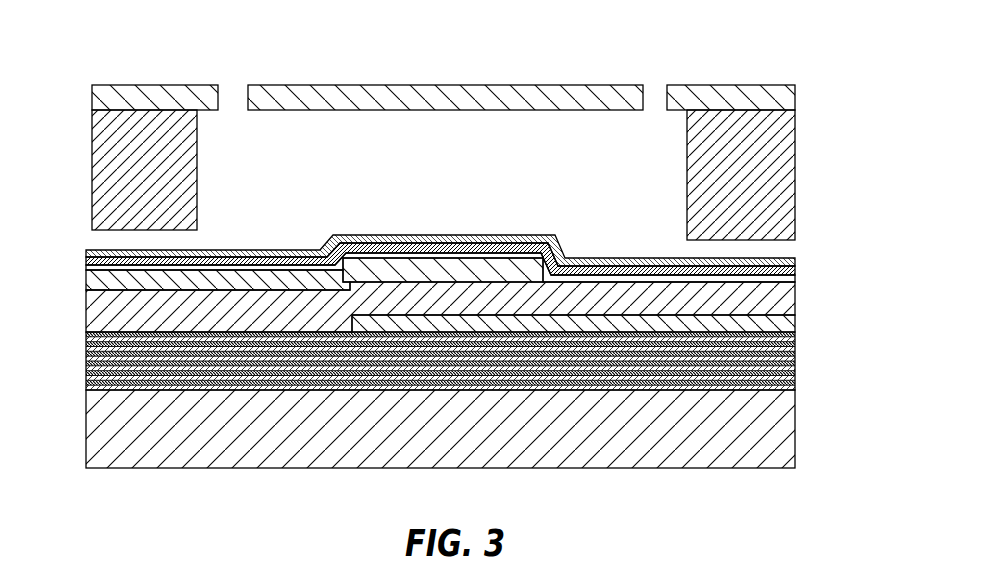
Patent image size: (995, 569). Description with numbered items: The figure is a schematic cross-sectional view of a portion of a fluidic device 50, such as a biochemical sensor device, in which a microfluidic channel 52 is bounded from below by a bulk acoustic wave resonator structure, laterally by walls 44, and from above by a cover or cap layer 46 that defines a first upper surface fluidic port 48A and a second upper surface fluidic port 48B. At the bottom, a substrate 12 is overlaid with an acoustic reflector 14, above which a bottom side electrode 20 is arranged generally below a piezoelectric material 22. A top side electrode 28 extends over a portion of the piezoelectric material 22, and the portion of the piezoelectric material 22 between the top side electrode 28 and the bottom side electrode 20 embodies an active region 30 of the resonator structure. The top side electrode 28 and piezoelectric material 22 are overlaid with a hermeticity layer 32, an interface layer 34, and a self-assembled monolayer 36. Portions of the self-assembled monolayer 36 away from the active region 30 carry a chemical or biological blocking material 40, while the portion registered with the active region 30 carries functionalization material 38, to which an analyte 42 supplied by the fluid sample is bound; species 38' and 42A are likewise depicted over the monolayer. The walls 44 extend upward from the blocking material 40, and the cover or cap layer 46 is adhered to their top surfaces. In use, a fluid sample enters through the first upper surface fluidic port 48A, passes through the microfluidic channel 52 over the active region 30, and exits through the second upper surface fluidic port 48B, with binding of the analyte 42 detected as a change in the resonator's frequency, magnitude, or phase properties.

The substrate 12 is at (795, 437).
The acoustic reflector 14 is at (798, 332).
The bottom side electrode 20 is at (795, 322).
The piezoelectric material 22 is at (86, 310).
The top side electrode 28 is at (86, 282).
The active region 30 is at (557, 182).
The hermeticity layer 32 is at (795, 280).
The interface layer 34 is at (795, 272).
The self-assembled monolayer 36 is at (795, 262).
The functionalization material 38 is at (683, 223).
The first species 38' is at (271, 212).
The chemical or biological blocking material 40 is at (92, 243).
The analyte 42 is at (562, 213).
The second species 42A is at (293, 228).
The walls 44 is at (795, 178).
The cover or cap layer 46 is at (795, 92).
The first upper surface fluidic port 48A is at (233, 93).
The second upper surface fluidic port 48B is at (655, 95).
The fluidic device 50 is at (113, 65).
The microfluidic channel 52 is at (326, 149).